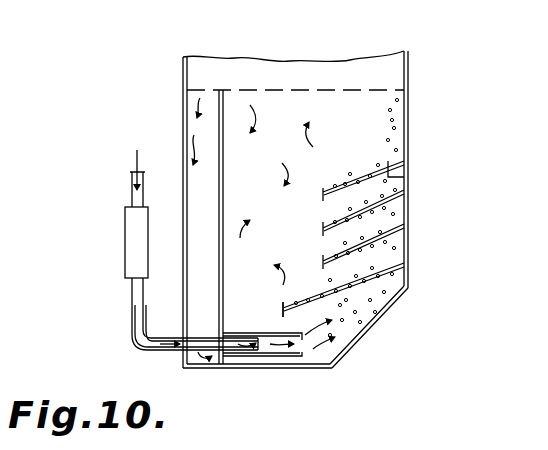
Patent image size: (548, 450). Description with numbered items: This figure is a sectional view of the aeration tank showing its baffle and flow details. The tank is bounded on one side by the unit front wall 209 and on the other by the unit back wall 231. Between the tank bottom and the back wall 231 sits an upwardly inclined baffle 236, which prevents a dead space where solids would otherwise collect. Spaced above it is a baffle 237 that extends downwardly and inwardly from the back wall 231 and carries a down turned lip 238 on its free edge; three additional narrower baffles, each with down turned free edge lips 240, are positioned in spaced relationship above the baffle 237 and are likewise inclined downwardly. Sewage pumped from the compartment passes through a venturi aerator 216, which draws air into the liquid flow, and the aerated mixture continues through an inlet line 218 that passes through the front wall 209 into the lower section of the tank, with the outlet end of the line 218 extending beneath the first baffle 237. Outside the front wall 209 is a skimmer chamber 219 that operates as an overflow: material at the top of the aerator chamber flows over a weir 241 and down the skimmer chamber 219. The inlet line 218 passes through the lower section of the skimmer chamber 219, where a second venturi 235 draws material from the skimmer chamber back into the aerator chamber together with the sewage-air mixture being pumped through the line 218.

The back wall 231 is at (410, 60).
The skimmer chamber 219 is at (197, 120).
The weir 241 is at (221, 95).
The front wall 209 is at (221, 194).
The venturi aerator 216 is at (130, 252).
The down turned free edge lips 240 is at (323, 232).
The baffle 237 is at (330, 287).
The down turned lip 238 is at (282, 308).
The upwardly inclined baffle 236 is at (356, 338).
The second venturi 235 is at (248, 358).
The inlet line 218 is at (300, 358).